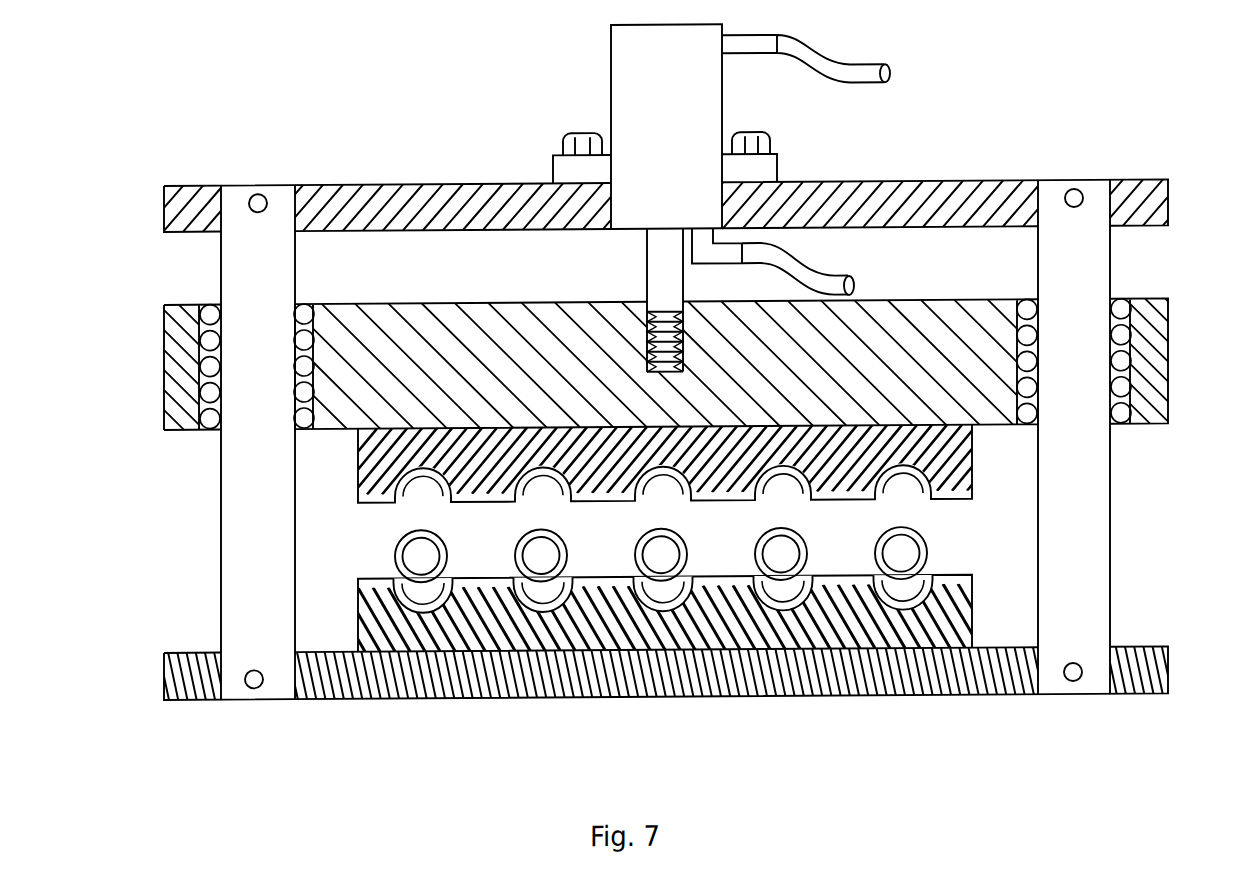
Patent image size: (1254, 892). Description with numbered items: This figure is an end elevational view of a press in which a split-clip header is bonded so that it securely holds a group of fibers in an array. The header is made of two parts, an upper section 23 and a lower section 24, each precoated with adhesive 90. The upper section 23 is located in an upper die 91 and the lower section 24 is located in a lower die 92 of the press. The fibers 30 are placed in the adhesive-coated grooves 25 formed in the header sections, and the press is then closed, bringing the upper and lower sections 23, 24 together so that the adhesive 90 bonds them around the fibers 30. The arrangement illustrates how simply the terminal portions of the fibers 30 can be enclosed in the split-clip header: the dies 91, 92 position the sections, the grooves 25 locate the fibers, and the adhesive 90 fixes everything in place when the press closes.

The upper section 23 is at (378, 460).
The lower section 24 is at (357, 615).
The grooves 25 is at (665, 609).
The fibers 30 is at (518, 573).
The adhesive 90 is at (703, 585).
The upper die 91 is at (1148, 394).
The lower die 92 is at (837, 680).